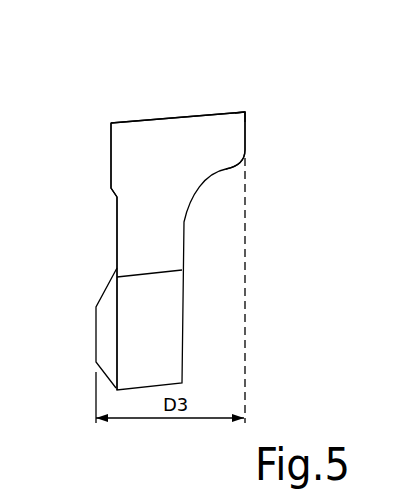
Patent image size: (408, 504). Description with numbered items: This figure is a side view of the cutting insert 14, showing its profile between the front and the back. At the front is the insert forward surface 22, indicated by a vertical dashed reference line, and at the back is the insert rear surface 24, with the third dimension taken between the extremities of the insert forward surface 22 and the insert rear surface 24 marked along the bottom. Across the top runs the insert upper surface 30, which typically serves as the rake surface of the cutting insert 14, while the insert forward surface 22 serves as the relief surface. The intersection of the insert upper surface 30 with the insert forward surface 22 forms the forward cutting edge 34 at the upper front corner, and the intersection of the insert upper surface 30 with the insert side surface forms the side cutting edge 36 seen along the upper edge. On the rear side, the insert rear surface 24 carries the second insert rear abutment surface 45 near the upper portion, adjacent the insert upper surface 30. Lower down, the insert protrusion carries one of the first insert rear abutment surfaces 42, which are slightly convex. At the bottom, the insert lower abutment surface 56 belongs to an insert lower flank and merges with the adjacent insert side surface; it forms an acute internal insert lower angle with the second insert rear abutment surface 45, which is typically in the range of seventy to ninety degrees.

The insert upper surface 30 is at (190, 86).
The side cutting edge 36 is at (138, 117).
The forward cutting edge 34 is at (247, 108).
The cutting insert 14 is at (258, 160).
The insert forward surface 22 is at (252, 198).
The second insert rear abutment surface 45 is at (110, 167).
The insert rear surface 24 is at (102, 219).
The insert lower abutment surface 56 is at (132, 277).
The first insert rear abutment surface 42 is at (108, 342).